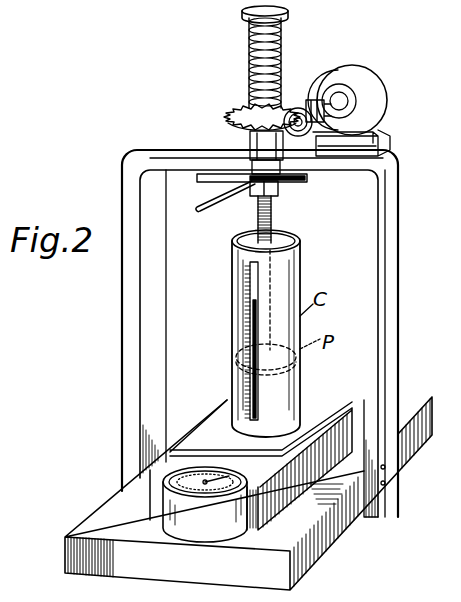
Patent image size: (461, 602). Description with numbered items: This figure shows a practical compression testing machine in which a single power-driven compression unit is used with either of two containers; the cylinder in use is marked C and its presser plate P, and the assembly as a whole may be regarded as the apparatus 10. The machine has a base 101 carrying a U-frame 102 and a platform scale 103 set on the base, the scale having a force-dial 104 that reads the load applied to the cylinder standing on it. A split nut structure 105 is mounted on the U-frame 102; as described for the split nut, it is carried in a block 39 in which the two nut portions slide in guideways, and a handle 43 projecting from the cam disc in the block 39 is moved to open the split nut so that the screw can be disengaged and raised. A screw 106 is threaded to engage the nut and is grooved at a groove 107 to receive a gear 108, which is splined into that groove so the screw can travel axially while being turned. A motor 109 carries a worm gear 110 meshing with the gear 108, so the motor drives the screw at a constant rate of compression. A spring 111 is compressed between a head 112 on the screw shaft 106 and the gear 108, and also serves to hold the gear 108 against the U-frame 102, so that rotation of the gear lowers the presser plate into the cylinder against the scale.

The apparatus 10 is at (164, 7).
The block 39 is at (198, 178).
The handle 43 is at (216, 196).
The base 101 is at (312, 553).
The U-frame 102 is at (384, 264).
The platform scale 103 is at (283, 495).
The force-dial 104 is at (193, 477).
The split nut structure 105 is at (290, 195).
The screw 106 is at (274, 209).
The groove 107 is at (254, 217).
The gear 108 is at (240, 107).
The motor 109 is at (362, 78).
The worm gear 110 is at (309, 106).
The spring 111 is at (279, 34).
The head 112 is at (282, 8).